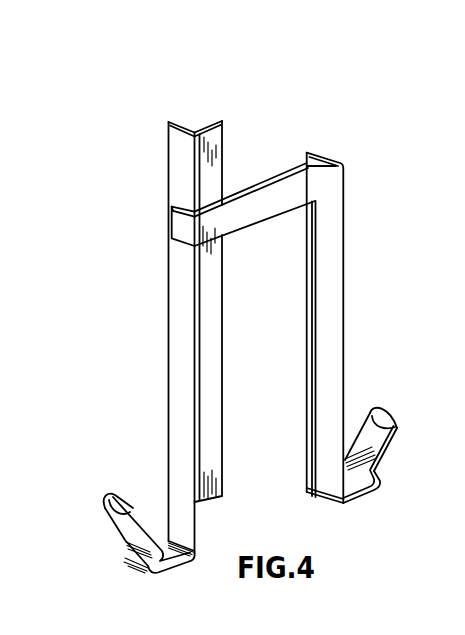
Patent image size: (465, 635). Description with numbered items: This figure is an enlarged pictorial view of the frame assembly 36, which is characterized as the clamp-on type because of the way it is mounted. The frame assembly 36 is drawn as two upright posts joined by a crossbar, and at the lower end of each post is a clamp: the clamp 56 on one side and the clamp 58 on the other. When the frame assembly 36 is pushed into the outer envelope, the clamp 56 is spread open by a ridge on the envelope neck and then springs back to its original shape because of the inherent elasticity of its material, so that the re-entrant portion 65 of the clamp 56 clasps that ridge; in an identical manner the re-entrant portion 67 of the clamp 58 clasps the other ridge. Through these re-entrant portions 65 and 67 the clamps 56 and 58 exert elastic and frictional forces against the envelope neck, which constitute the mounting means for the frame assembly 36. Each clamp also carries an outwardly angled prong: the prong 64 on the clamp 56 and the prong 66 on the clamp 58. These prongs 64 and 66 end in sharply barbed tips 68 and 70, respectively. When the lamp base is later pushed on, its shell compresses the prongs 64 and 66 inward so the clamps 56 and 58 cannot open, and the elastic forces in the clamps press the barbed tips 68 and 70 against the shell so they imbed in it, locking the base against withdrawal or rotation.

The frame assembly 36 is at (128, 238).
The clamp 56 is at (123, 523).
The clamp 58 is at (400, 448).
The prong 64 is at (148, 517).
The re-entrant portion 65 is at (130, 559).
The prong 66 is at (393, 437).
The re-entrant portion 67 is at (379, 473).
The barbed tip 68 is at (107, 503).
The barbed tip 70 is at (398, 422).